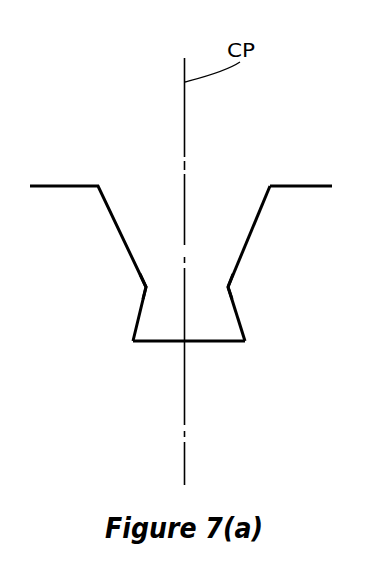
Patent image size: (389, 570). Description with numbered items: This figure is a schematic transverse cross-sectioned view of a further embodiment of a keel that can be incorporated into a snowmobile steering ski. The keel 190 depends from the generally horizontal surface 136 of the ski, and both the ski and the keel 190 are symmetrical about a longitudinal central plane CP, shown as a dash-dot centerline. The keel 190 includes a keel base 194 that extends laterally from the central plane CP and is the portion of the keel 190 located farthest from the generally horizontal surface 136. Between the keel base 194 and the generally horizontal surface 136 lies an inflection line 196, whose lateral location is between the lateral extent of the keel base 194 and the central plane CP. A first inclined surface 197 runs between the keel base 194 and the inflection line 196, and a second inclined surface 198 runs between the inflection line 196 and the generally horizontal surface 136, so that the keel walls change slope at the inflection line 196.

The generally horizontal surface 136 is at (312, 187).
The keel 190 is at (233, 228).
The keel base 194 is at (230, 343).
The inflection line 196 is at (143, 287).
The first inclined surface 197 is at (242, 324).
The second inclined surface 198 is at (255, 228).